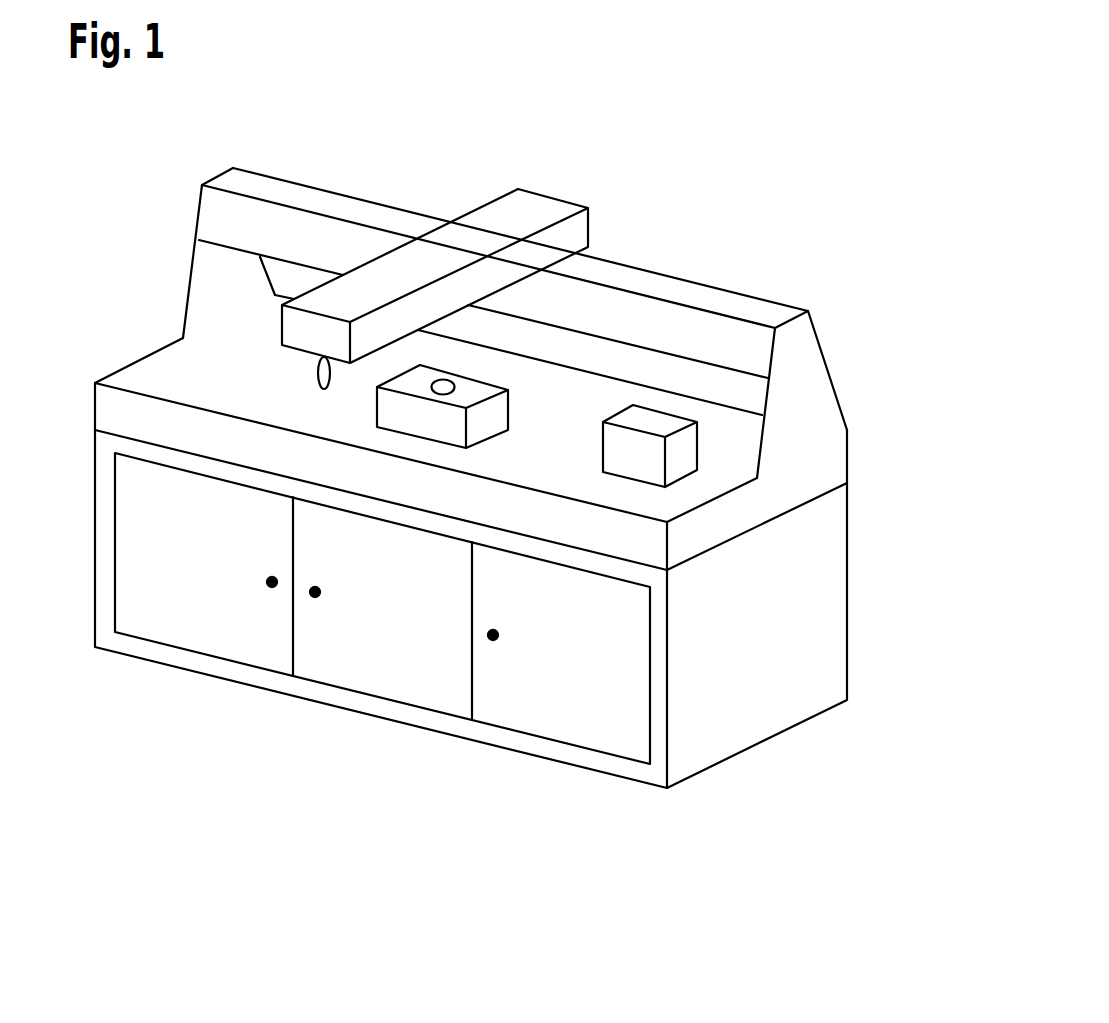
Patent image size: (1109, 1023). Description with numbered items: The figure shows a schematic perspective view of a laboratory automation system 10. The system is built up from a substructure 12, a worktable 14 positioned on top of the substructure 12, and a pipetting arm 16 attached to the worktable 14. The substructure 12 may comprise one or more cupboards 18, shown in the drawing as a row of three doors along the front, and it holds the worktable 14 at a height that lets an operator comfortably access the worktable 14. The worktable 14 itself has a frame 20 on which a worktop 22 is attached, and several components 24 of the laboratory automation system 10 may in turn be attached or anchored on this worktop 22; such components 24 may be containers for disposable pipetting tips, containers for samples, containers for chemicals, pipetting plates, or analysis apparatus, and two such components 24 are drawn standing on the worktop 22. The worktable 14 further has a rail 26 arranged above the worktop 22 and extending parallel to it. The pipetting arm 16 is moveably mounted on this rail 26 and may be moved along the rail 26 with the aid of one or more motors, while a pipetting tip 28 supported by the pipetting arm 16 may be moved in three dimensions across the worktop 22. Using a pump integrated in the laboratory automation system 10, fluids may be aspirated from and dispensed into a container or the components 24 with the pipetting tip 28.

The laboratory automation system 10 is at (884, 190).
The substructure 12 is at (905, 600).
The worktable 14 is at (905, 450).
The pipetting arm 16 is at (582, 163).
The cupboards 18 is at (202, 593).
The frame 20 is at (817, 388).
The worktop 22 is at (187, 377).
The components 24 is at (415, 417).
The rail 26 is at (700, 293).
The pipetting tip 28 is at (318, 370).